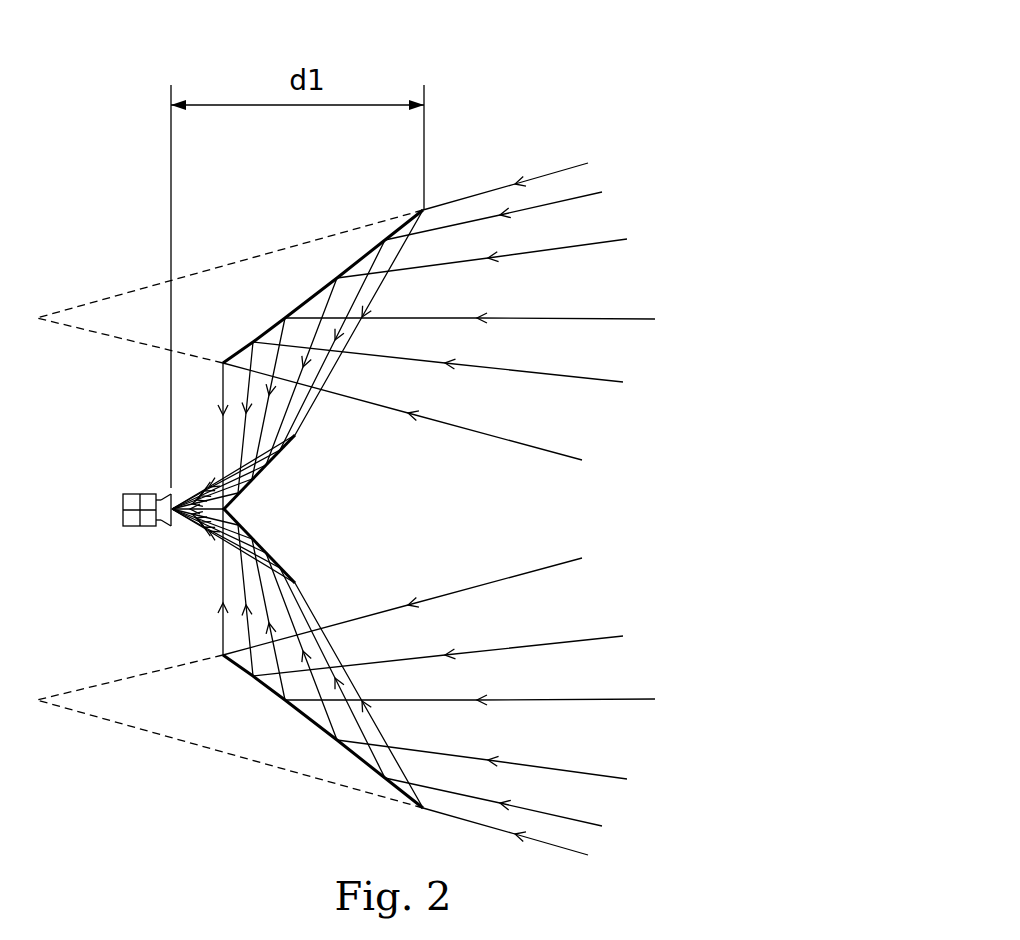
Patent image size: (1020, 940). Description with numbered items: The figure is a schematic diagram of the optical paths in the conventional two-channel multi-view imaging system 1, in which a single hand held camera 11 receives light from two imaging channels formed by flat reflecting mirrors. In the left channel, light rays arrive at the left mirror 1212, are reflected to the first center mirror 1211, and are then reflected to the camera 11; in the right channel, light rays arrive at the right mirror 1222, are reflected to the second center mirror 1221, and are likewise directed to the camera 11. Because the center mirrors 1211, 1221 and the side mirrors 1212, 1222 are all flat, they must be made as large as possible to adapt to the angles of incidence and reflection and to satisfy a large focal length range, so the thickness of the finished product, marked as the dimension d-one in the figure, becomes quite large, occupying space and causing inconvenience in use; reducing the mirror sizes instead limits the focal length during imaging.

The two-channel multi-view imaging system 1 is at (648, 236).
The hand held camera 11 is at (133, 517).
The first center mirror 1211 is at (263, 470).
The left mirror 1212 is at (320, 287).
The second center mirror 1221 is at (283, 570).
The right mirror 1222 is at (323, 733).